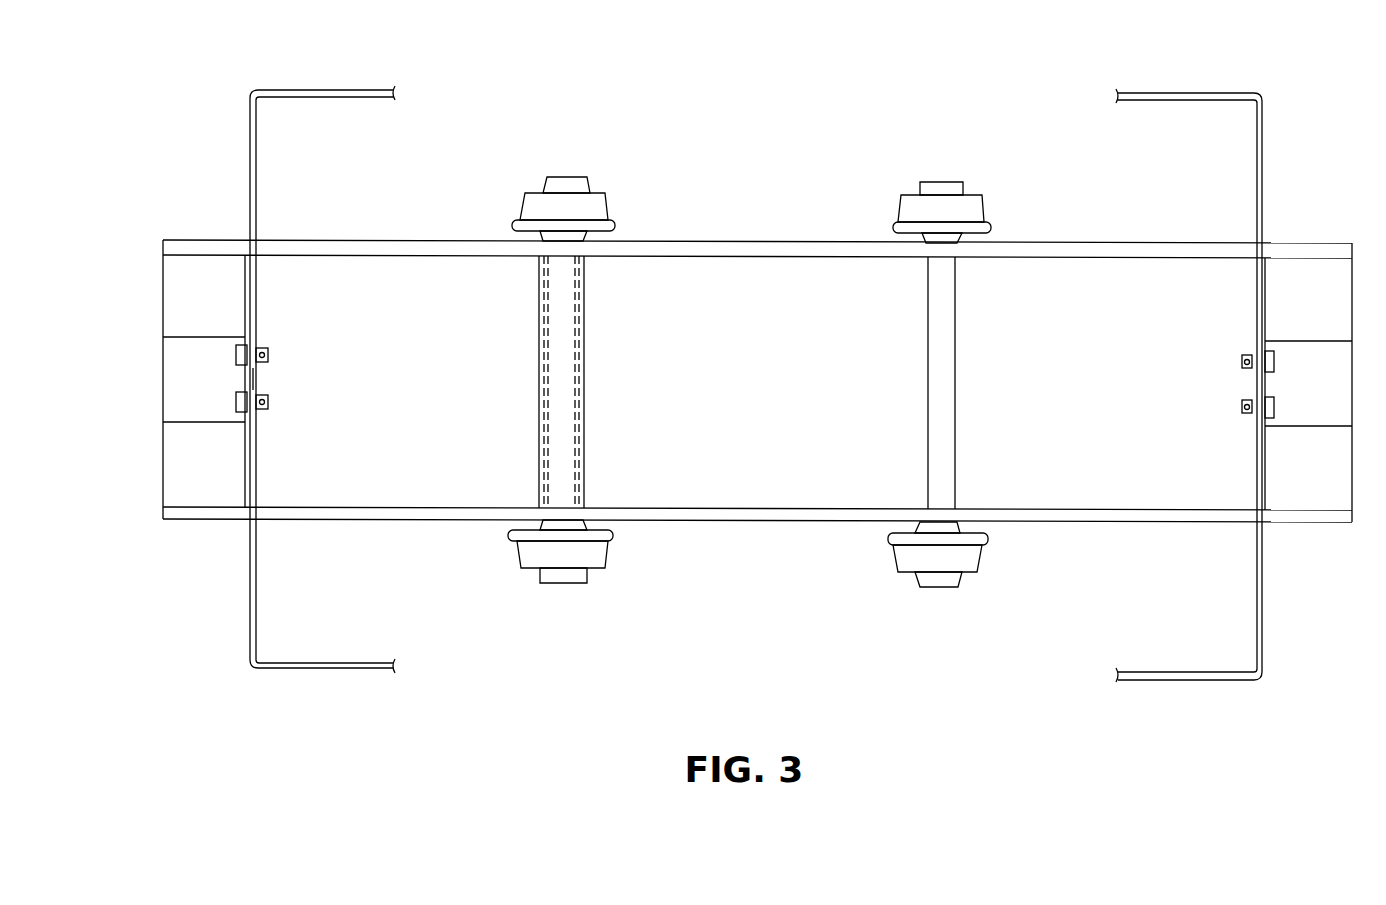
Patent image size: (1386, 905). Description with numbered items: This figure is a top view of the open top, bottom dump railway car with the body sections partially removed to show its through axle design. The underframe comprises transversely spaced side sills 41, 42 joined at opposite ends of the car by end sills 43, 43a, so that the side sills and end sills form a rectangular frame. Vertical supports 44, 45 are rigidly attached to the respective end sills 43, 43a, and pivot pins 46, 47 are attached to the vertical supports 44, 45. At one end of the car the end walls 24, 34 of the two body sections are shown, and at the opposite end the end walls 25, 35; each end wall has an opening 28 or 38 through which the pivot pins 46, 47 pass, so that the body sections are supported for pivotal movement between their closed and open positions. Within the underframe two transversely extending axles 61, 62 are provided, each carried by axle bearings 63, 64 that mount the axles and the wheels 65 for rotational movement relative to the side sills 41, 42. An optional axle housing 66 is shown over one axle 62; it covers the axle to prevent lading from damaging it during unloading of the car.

The end wall 24 is at (251, 150).
The end wall 25 is at (1262, 122).
The end wall 34 is at (248, 612).
The end wall 35 is at (1262, 628).
The side sill 41 is at (393, 249).
The side sill 42 is at (389, 512).
The end sill 43 is at (217, 474).
The end sill 43a is at (1322, 477).
The vertical support 44 is at (246, 282).
The vertical support 45 is at (1266, 305).
The pivot pin 46 is at (238, 355).
The pivot pin 47 is at (1272, 358).
The opening 28 is at (256, 347).
The opening 38 is at (253, 406).
The axle 61 is at (928, 374).
The axle 62 is at (548, 403).
The axle housing 66 is at (535, 382).
The axle bearing 63 is at (950, 530).
The axle bearing 64 is at (582, 527).
The wheels 65 is at (912, 211).